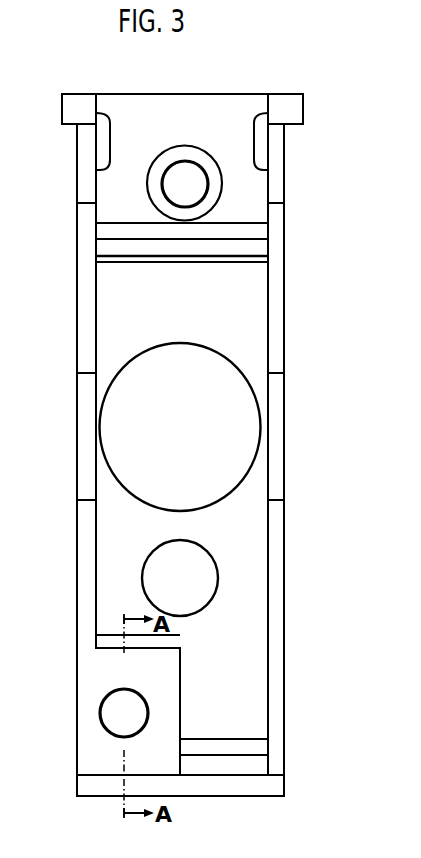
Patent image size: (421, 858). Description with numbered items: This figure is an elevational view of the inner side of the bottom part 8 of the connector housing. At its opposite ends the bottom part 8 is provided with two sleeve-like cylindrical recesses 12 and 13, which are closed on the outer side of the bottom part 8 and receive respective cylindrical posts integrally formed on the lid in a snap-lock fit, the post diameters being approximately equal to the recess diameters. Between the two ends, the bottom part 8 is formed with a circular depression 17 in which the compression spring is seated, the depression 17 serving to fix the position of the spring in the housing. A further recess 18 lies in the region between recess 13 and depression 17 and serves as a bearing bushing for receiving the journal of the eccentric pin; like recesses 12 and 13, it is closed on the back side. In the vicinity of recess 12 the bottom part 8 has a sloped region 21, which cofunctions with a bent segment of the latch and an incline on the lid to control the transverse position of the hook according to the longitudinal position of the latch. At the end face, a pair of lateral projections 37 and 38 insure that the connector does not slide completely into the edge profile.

The bottom part 8 is at (68, 334).
The cylindrical recess 12 is at (170, 183).
The cylindrical recess 13 is at (122, 710).
The circular depression 17 is at (125, 453).
The recess 18 is at (163, 573).
The sloped region 21 is at (255, 249).
The lateral projection 37 is at (73, 109).
The lateral projection 38 is at (290, 110).